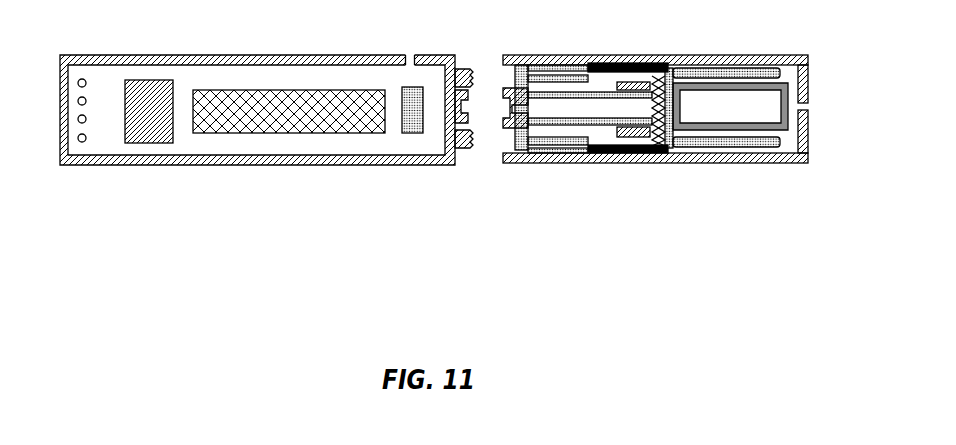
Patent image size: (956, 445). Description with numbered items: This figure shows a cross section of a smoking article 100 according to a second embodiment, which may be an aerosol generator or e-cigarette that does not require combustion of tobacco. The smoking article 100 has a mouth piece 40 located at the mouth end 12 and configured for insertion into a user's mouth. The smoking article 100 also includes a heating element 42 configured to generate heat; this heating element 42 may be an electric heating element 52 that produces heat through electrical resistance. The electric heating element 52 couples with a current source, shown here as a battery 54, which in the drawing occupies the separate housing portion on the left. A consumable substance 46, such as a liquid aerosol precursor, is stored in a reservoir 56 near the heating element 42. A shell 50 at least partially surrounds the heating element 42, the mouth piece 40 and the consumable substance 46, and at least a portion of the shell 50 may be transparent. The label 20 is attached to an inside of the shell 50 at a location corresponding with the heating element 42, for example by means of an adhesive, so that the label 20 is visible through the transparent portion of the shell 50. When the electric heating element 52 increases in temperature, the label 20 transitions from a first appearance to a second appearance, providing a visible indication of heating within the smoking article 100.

The mouth end 12 is at (686, 86).
The label 20 is at (642, 152).
The mouth piece 40 is at (762, 154).
The heating element 42 is at (667, 85).
The consumable substance 46 is at (558, 80).
The shell 50 is at (758, 56).
The electric heating element 52 is at (663, 128).
The battery 54 is at (265, 113).
The reservoir 56 is at (553, 140).
The smoking article 100 is at (680, 155).